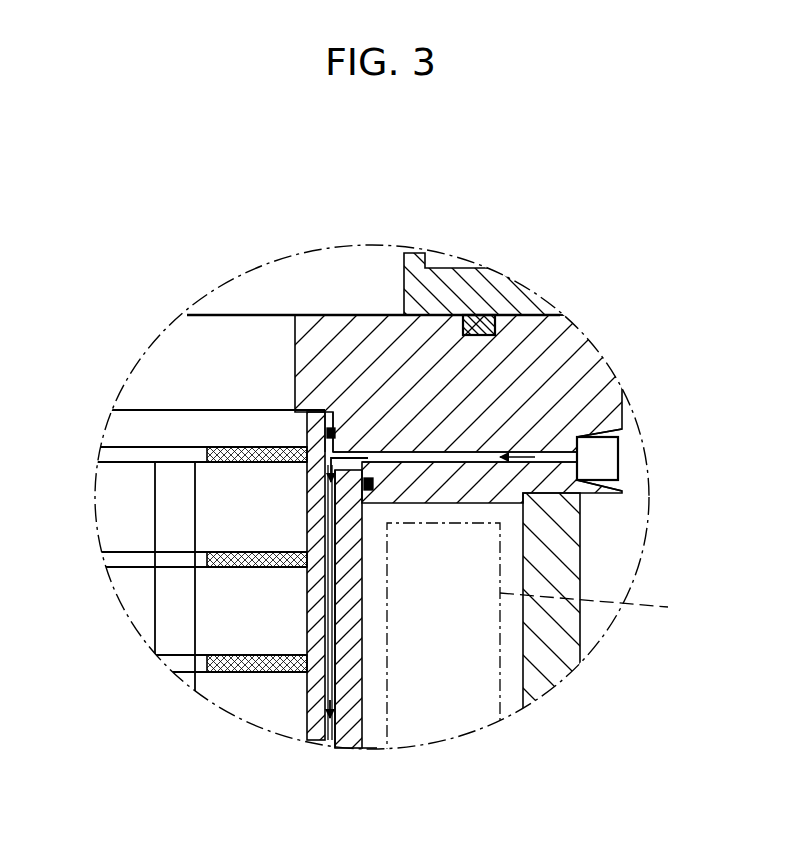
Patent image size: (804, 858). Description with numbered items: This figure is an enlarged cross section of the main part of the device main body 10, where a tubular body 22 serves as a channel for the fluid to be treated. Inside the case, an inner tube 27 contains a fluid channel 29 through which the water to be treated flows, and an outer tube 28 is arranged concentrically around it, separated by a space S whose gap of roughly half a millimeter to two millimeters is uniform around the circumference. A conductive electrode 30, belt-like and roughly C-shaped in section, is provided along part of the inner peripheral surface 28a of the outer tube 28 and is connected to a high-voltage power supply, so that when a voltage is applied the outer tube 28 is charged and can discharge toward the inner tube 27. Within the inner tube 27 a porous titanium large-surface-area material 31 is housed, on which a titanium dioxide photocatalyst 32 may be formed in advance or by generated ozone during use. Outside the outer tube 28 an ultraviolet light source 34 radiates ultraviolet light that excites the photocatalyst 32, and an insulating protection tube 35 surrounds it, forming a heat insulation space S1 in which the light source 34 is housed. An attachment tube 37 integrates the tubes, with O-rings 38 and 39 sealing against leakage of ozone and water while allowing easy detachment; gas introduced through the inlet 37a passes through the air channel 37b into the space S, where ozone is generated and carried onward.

The device main body 10 is at (612, 521).
The tubular body 22 is at (492, 298).
The inner tube 27 is at (318, 735).
The outer tube 28 is at (355, 732).
The inner peripheral surface 28a is at (338, 553).
The fluid channel 29 is at (115, 495).
The electrode 30 is at (362, 687).
The large-surface-area material 31 is at (223, 673).
The photocatalyst 32 is at (221, 568).
The ultraviolet light source 34 is at (600, 608).
The protection tube 35 is at (560, 638).
The attachment tube 37 is at (385, 347).
The inlet 37a is at (622, 455).
The air channel 37b is at (470, 453).
The O-ring 38 is at (333, 412).
The O-ring 39 is at (330, 428).
The space S is at (326, 678).
The heat insulation space S1 is at (512, 700).